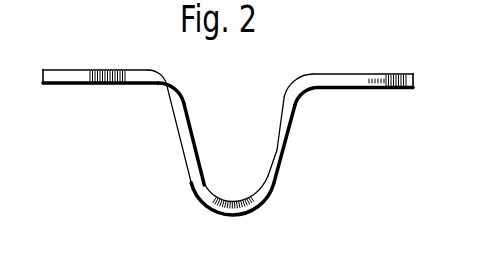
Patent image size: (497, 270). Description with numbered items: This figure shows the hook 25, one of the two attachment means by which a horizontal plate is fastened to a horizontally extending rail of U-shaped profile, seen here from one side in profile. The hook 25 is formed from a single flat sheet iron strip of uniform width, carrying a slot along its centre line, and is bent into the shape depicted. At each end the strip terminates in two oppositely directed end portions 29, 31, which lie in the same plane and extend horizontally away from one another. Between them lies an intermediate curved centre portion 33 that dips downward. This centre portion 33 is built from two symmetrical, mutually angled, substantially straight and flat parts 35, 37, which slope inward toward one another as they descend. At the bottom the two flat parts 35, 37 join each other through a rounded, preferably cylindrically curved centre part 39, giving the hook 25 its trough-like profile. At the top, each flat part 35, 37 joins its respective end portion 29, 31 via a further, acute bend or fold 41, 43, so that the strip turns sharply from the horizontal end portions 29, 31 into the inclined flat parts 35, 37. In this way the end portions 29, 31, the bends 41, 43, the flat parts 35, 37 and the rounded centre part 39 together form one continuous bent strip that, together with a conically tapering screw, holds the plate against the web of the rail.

The hook 25 is at (228, 154).
The end portion 29 is at (88, 82).
The end portion 31 is at (388, 89).
The intermediate curved centre portion 33 is at (278, 149).
The straight flat part 35 is at (181, 142).
The straight flat part 37 is at (272, 181).
The rounded centre part 39 is at (228, 216).
The acute bend 41 is at (168, 79).
The acute bend 43 is at (293, 82).